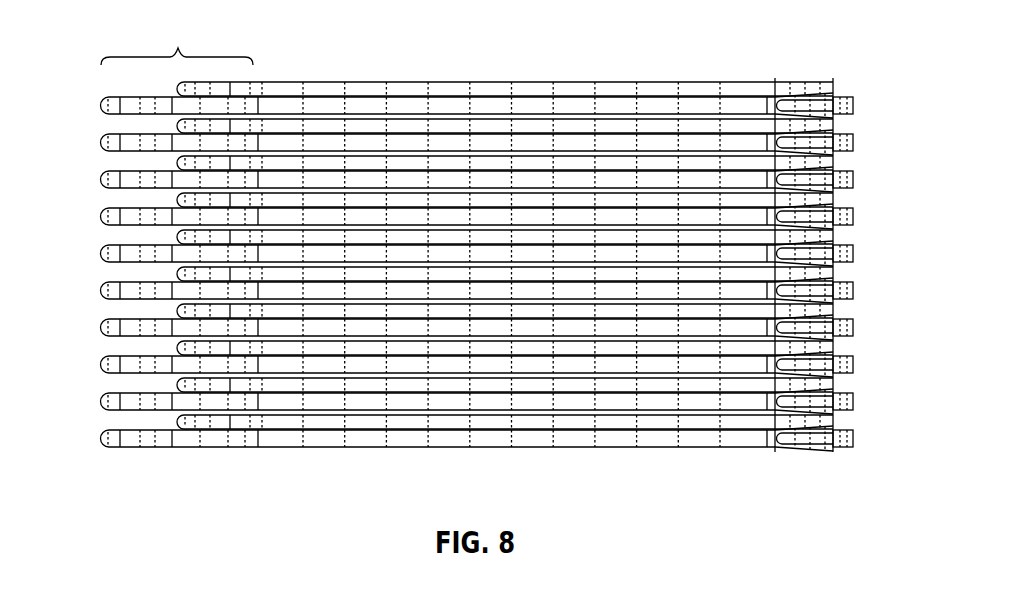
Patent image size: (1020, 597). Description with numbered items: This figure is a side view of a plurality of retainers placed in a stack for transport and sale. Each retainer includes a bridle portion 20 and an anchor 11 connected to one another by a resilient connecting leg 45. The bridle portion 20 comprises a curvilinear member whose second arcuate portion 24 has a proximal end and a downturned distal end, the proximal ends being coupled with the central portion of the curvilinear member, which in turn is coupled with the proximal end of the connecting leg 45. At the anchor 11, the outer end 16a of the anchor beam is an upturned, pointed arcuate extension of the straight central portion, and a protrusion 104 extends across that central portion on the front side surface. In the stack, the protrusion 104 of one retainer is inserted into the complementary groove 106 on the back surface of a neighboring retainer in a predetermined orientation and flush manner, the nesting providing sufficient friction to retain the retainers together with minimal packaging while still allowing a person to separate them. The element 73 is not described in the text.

The bridle portion 20 is at (177, 40).
The second arcuate portion 24 is at (192, 82).
The first tube 73 is at (97, 106).
The resilient connecting leg 45 is at (447, 80).
The anchor 11 is at (784, 70).
The protrusion 104 is at (808, 80).
The outer end 16a is at (780, 438).
The complementary groove 106 is at (810, 452).